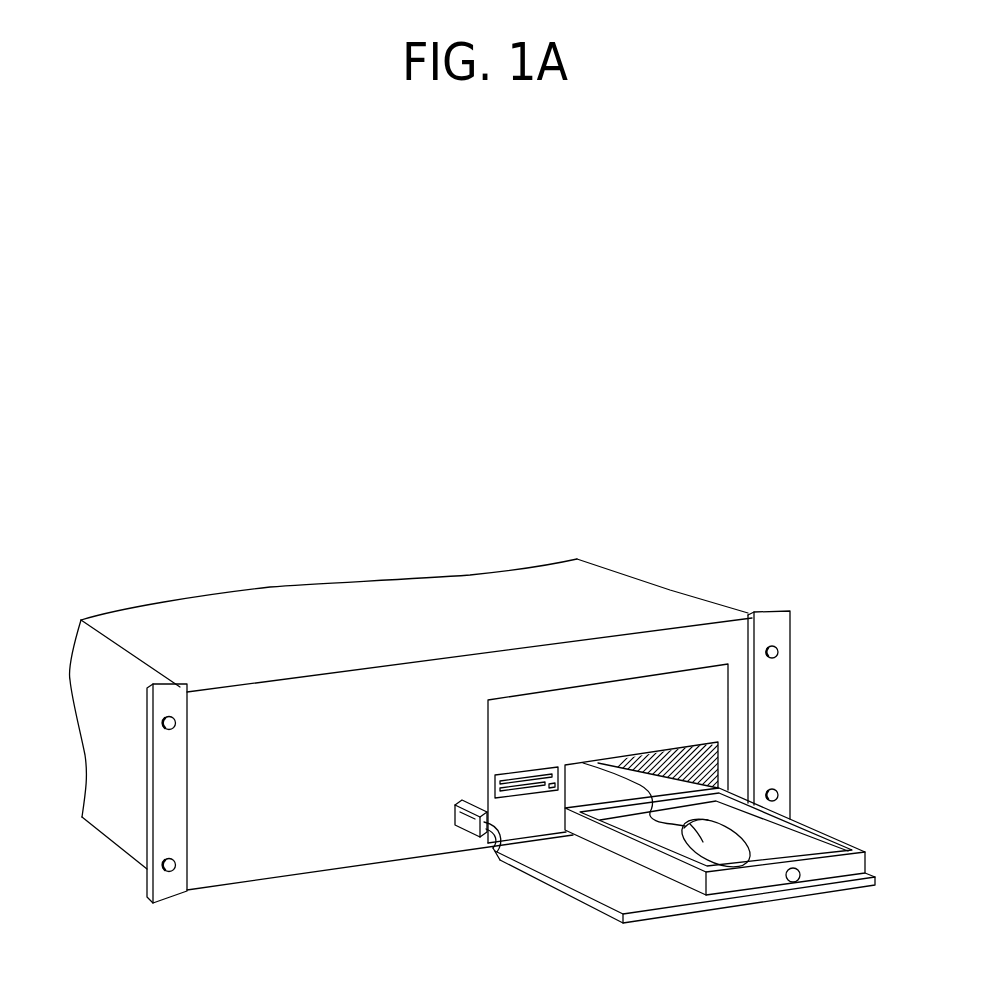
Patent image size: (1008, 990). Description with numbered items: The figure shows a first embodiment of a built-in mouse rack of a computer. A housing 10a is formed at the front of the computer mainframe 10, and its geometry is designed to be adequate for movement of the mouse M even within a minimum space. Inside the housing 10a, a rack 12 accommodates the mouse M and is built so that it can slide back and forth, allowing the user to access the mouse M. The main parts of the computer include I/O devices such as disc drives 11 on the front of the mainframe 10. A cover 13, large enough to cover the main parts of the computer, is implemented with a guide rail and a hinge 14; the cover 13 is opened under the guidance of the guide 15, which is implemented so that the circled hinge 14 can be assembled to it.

The computer mainframe 10 is at (668, 612).
The housing 10a is at (698, 768).
The disc drives 11 is at (505, 710).
The rack 12 is at (800, 877).
The cover 13 is at (587, 880).
The hinge 14 is at (513, 863).
The guide 15 is at (473, 825).
The mouse M is at (723, 840).